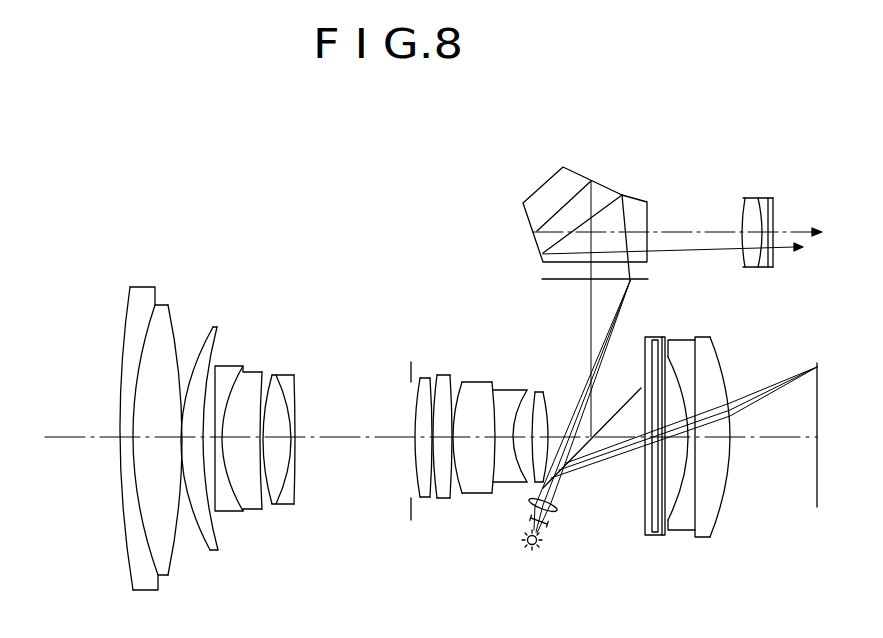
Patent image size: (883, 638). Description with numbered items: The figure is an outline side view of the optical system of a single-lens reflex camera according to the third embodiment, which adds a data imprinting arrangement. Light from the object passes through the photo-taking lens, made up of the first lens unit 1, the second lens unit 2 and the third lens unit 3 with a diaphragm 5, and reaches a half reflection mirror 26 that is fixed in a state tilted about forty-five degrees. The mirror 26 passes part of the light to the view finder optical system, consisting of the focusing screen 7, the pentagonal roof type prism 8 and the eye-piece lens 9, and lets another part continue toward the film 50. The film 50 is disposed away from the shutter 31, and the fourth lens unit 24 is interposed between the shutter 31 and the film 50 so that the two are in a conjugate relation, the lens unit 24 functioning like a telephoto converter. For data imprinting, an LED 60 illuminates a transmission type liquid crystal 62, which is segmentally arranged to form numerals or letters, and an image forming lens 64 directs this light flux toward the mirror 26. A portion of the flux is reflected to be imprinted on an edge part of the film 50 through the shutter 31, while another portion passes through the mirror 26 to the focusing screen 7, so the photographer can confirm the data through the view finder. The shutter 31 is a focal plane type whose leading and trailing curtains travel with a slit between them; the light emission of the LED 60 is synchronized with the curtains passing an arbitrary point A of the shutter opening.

The first lens unit 1 is at (210, 598).
The second lens unit 2 is at (298, 598).
The third lens unit 3 is at (533, 592).
The diaphragm 5 is at (409, 518).
The focusing screen 7 is at (552, 281).
The pentagonal roof type prism 8 is at (578, 172).
The eye-piece lens 9 is at (793, 182).
The fourth lens unit 24 is at (718, 590).
The half reflection mirror 26 is at (620, 407).
The shutter 31 is at (655, 536).
The film 50 is at (818, 485).
The LED 60 is at (537, 548).
The transmission type liquid crystal 62 is at (544, 527).
The image forming lens 64 is at (558, 510).
The point of the opening of the shutter A is at (667, 402).